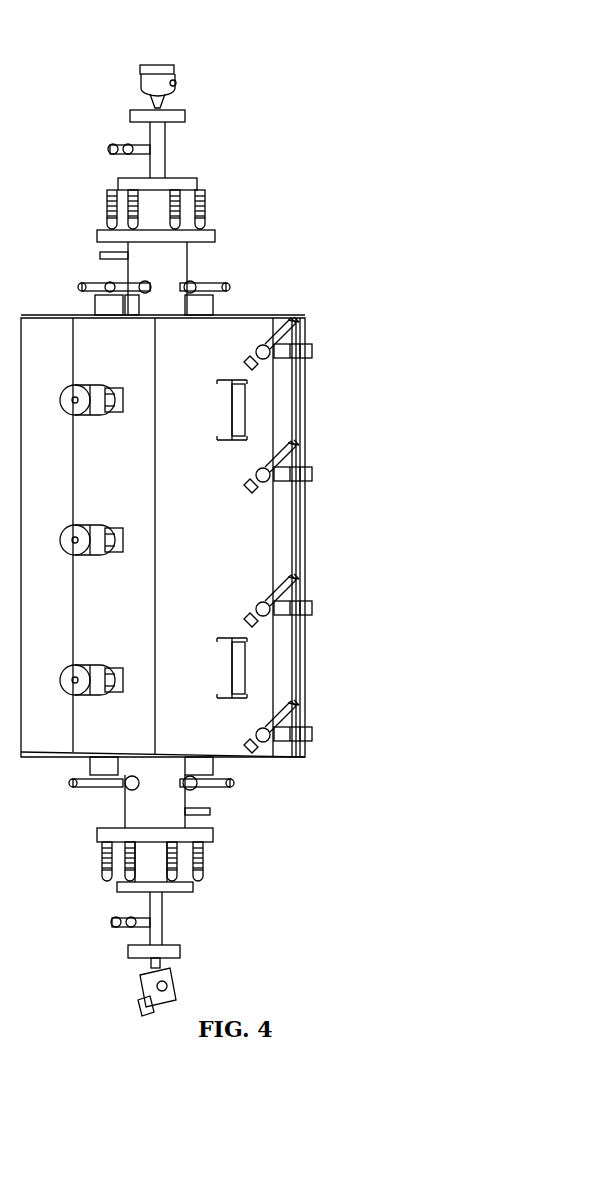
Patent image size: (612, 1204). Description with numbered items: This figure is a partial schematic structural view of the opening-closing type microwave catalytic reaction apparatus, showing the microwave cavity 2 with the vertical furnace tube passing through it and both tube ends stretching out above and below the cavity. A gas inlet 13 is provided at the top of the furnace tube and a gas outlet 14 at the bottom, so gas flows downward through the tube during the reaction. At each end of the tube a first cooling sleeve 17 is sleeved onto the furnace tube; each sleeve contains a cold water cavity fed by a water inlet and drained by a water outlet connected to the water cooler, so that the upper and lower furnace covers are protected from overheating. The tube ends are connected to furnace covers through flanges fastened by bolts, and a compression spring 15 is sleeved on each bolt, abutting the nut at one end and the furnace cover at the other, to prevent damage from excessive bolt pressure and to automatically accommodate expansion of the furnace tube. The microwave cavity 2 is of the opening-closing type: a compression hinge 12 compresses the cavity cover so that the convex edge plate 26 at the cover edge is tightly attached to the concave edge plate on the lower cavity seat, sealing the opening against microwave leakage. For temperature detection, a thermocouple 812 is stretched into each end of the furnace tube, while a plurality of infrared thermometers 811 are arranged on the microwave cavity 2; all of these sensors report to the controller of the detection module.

The microwave cavity 2 is at (210, 570).
The compression hinge 12 is at (296, 343).
The gas inlet 13 is at (128, 155).
The gas outlet 14 is at (150, 923).
The compression spring 15 is at (205, 855).
The first cooling sleeve 17 is at (163, 260).
The convex edge plate 26 is at (282, 423).
The infrared thermometer 811 is at (100, 680).
The thermocouple 812 is at (176, 83).